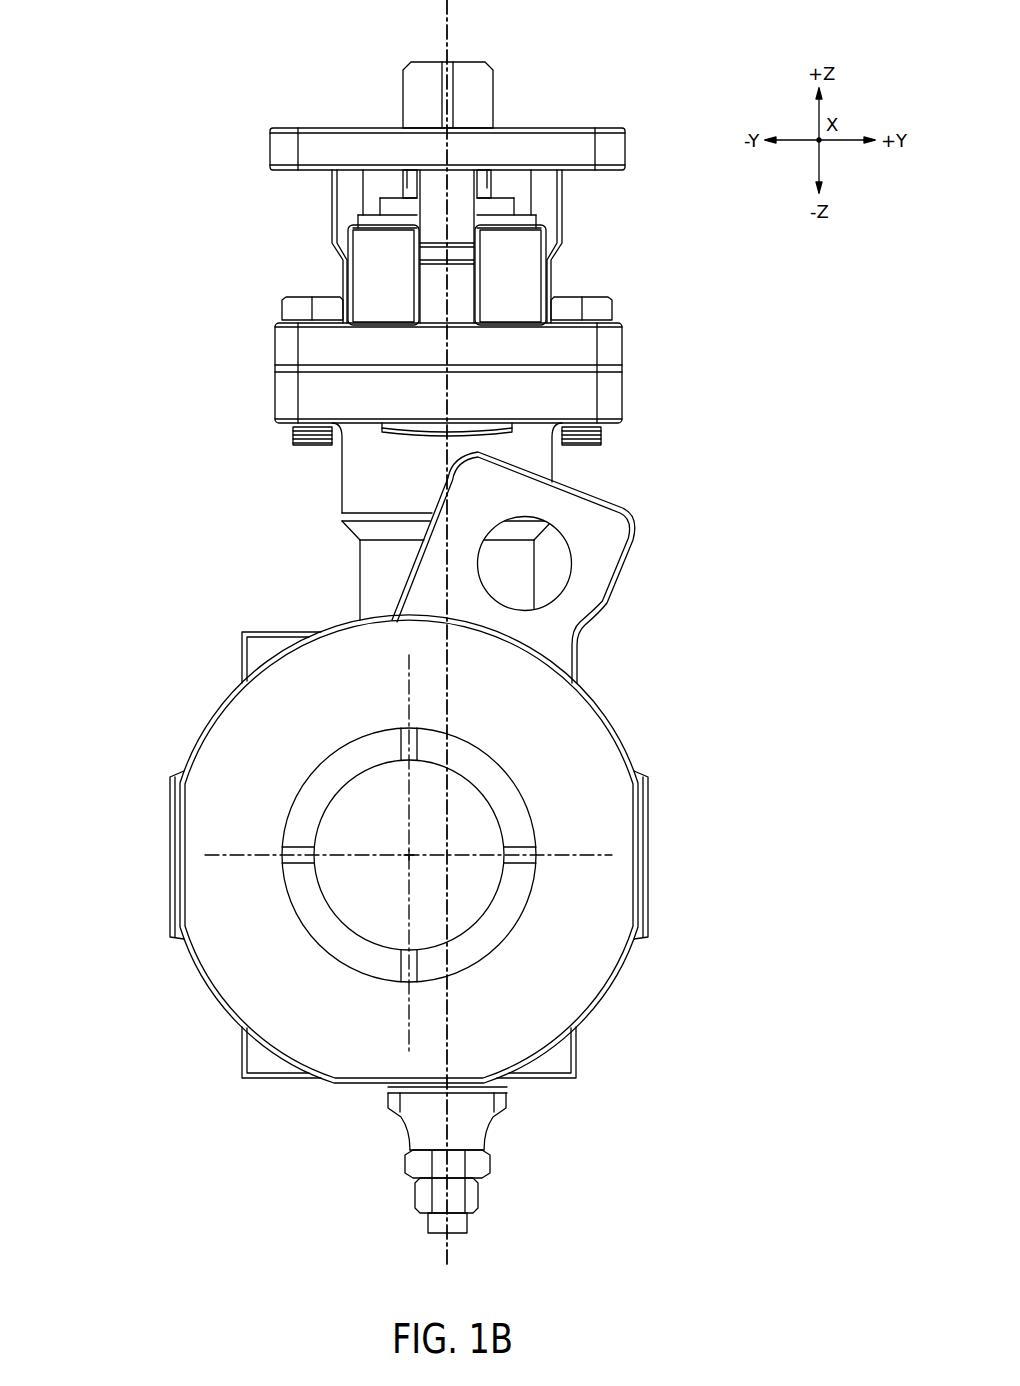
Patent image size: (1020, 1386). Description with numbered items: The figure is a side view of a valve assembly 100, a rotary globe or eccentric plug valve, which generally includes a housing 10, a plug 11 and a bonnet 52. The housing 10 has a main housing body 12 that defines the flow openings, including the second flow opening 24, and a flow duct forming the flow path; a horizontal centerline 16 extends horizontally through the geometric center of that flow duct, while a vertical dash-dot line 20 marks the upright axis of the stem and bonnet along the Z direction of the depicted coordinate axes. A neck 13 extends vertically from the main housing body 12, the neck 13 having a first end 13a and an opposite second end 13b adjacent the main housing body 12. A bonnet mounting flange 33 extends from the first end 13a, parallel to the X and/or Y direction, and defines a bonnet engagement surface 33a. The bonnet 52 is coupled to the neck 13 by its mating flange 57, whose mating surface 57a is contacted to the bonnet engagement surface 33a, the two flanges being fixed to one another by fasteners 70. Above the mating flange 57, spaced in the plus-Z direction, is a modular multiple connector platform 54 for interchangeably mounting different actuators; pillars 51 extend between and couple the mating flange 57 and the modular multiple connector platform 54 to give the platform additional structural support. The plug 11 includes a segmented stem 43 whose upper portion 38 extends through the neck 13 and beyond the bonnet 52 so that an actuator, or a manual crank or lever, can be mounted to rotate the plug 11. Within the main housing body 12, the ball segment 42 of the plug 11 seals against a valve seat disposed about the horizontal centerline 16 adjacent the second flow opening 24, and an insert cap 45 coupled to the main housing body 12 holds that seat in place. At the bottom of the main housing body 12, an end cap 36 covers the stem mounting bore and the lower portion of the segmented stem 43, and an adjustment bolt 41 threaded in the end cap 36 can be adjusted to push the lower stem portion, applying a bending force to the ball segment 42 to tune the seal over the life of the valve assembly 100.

The valve assembly 100 is at (116, 146).
The central axis 20 is at (450, 33).
The upper portion 38 is at (495, 70).
The segmented stem 43 is at (528, 86).
The modular multiple connector platform 54 is at (262, 148).
The pillars 51 is at (332, 222).
The bonnet 52 is at (602, 242).
The fasteners 70 is at (282, 300).
The mating flange 57 is at (262, 345).
The mating surface 57a is at (320, 373).
The bonnet engagement surface 33a is at (612, 370).
The bonnet mounting flange 33 is at (622, 400).
The first end 13a is at (630, 421).
The neck 13 is at (322, 492).
The second end 13b is at (356, 612).
The housing 10 is at (337, 614).
The main housing body 12 is at (218, 712).
The plug 11 is at (344, 773).
The ball segment 42 is at (322, 810).
The insert cap 45 is at (298, 895).
The second flow opening 24 is at (316, 932).
The horizontal centerline 16 is at (409, 843).
The end cap 36 is at (400, 1120).
The adjustment bolt 41 is at (415, 1200).